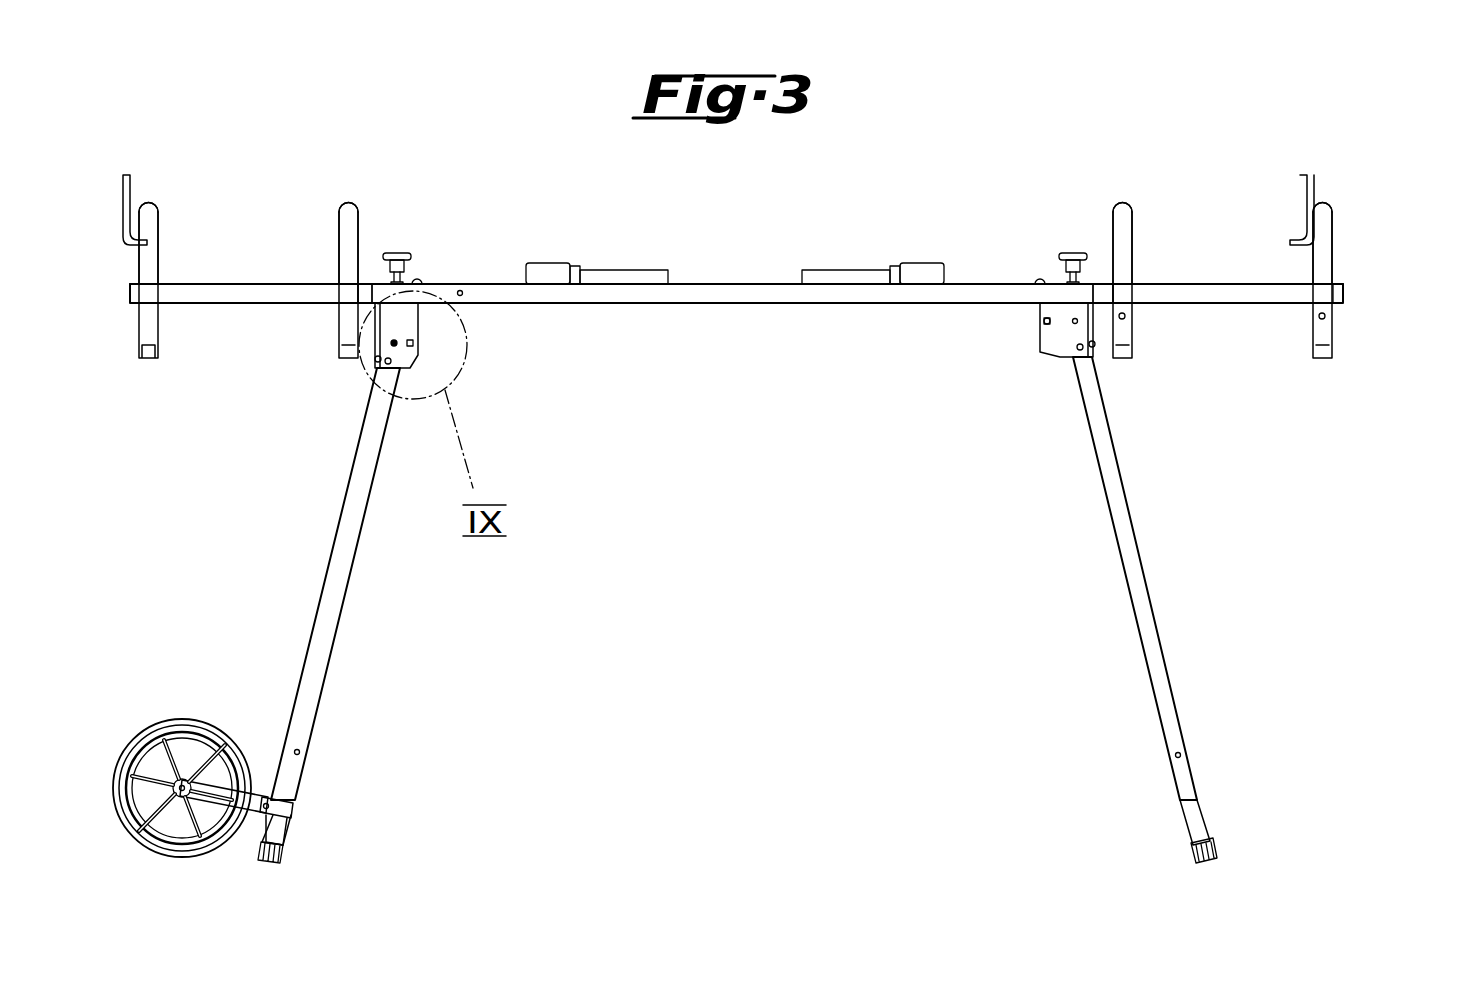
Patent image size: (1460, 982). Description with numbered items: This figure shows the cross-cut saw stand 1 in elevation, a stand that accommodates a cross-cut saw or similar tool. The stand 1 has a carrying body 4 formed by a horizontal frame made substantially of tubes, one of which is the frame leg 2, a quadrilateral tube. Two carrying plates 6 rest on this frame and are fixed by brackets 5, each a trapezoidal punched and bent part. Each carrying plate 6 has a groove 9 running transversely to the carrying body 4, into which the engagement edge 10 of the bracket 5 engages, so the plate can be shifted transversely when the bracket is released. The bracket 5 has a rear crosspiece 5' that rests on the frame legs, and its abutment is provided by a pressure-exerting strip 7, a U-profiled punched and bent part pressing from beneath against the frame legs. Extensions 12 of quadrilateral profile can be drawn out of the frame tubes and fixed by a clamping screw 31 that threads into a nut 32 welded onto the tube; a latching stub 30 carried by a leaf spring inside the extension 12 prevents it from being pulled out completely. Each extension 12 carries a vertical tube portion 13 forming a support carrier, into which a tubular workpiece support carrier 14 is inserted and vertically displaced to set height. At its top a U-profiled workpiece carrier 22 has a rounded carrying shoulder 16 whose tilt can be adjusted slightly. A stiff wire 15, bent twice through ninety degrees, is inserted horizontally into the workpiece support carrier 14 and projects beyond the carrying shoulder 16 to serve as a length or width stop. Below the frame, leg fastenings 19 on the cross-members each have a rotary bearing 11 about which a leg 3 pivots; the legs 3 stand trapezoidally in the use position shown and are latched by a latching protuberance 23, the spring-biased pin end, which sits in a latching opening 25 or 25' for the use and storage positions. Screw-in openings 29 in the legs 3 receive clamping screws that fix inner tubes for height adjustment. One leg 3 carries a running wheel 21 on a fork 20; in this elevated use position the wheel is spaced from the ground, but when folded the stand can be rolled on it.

The cross-cut saw stand 1 is at (862, 147).
The frame leg 2 is at (782, 296).
The leg 3 is at (348, 575).
The carrying body 4 is at (778, 286).
The bracket 5 is at (735, 228).
The rear crosspiece 5' is at (736, 208).
The carrying plate 6 is at (628, 275).
The pressure-exerting strip 7 is at (545, 305).
The groove 9 is at (578, 285).
The engagement edge 10 is at (575, 268).
The rotary bearing 11 is at (397, 343).
The extension 12 is at (250, 297).
The tube portion 13 is at (142, 328).
The workpiece support carrier 14 is at (152, 230).
The wire 15 is at (125, 178).
The carrying shoulder 16 is at (148, 203).
The leg fastening 19 is at (405, 355).
The fork 20 is at (258, 792).
The running wheel 21 is at (182, 733).
The workpiece carrier 22 is at (160, 233).
The latching protuberance 23 is at (389, 364).
The latching opening 25 is at (735, 392).
The latching opening 25' is at (728, 348).
The screw-in opening 29 is at (296, 750).
The latching stub 30 is at (420, 280).
The clamping screw 31 is at (383, 257).
The nut 32 is at (372, 288).